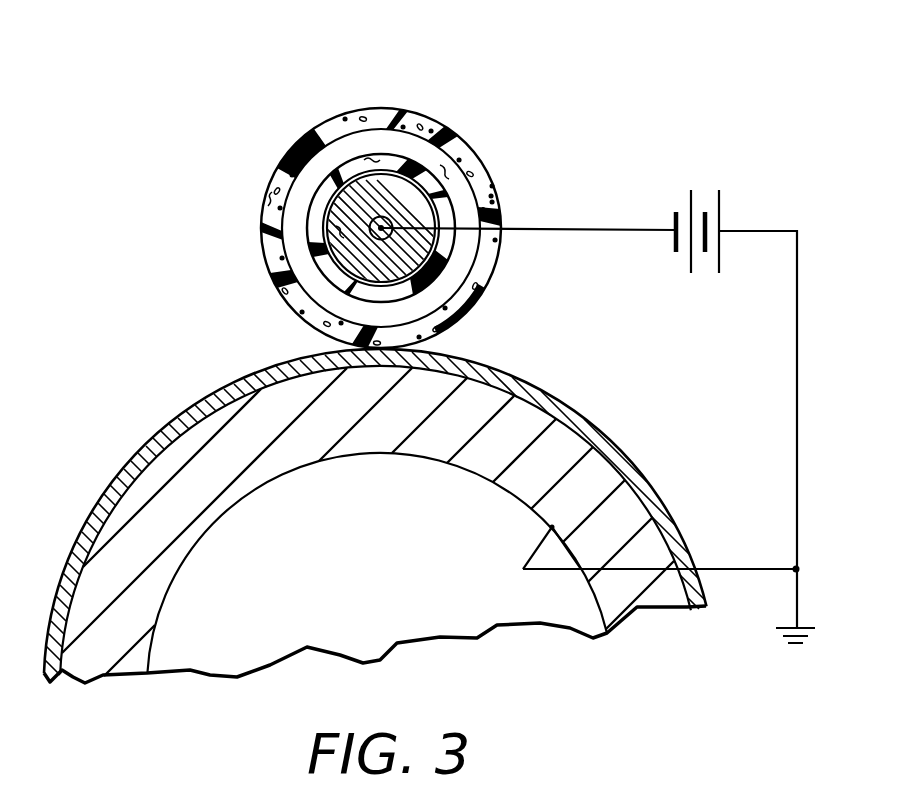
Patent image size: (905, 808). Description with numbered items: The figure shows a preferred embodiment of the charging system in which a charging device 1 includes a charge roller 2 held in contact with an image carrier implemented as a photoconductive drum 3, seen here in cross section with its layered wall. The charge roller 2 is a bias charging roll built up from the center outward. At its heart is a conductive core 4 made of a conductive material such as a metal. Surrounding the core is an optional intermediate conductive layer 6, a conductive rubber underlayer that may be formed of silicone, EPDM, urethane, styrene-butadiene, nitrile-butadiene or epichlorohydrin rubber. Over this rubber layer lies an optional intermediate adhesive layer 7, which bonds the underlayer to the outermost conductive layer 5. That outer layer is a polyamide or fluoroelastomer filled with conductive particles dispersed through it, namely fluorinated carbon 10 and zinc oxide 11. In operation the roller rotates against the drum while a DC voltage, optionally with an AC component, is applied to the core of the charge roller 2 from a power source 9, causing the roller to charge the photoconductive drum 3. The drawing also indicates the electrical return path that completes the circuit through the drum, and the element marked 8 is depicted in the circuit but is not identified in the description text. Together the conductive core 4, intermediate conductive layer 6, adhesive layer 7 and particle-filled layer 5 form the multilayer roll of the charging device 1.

The charging device 1 is at (122, 62).
The charge roller 2 is at (272, 132).
The photoconductive drum 3 is at (618, 419).
The conductive core 4 is at (340, 230).
The conductive layer 5 is at (268, 206).
The intermediate conductive layer 6 is at (371, 158).
The intermediate adhesive layer 7 is at (447, 170).
The power supply 8 is at (723, 168).
The power source 9 is at (797, 595).
The fluorinated carbon 10 is at (492, 202).
The zinc oxide 11 is at (420, 126).